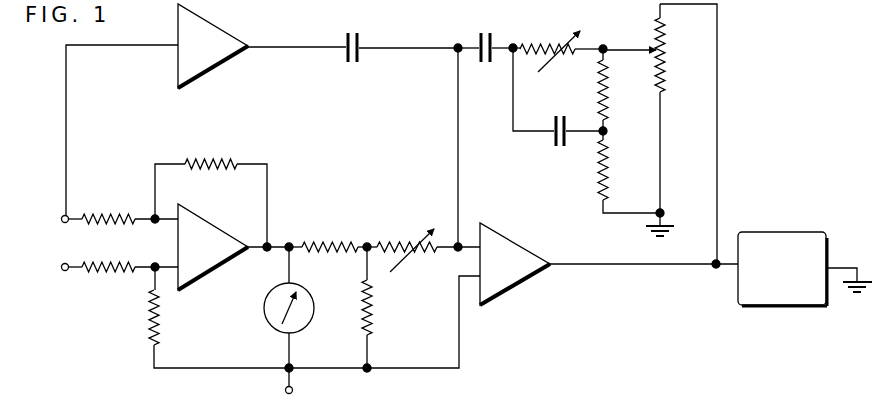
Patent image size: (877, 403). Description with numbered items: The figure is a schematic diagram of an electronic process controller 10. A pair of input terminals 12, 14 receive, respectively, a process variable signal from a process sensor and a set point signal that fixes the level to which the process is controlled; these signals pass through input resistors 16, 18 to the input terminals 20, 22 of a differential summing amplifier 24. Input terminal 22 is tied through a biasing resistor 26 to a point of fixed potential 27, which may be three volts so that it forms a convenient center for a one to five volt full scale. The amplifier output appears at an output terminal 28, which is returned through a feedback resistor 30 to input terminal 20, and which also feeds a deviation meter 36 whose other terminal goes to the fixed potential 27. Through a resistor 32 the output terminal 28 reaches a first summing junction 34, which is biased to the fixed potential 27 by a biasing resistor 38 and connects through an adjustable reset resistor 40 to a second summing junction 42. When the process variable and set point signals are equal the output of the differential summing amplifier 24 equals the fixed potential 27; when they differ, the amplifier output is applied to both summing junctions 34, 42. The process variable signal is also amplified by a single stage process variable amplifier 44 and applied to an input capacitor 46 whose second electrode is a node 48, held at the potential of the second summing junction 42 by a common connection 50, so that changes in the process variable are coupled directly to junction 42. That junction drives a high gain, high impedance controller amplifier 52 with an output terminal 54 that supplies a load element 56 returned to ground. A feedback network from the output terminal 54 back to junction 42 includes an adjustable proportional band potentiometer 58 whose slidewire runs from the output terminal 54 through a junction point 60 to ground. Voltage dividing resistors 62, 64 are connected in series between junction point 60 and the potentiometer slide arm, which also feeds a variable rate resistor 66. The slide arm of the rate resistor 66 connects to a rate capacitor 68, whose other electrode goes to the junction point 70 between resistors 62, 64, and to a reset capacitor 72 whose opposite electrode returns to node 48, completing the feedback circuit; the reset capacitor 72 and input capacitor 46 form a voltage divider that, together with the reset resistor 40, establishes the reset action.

The electronic process controller 10 is at (61, 122).
The input terminal 12 is at (65, 224).
The input terminal 14 is at (65, 272).
The input resistor 16 is at (113, 212).
The input resistor 18 is at (120, 274).
The input terminal of differential summing amplifier 20 is at (153, 214).
The input terminal of differential summing amplifier 22 is at (154, 262).
The differential summing amplifier 24 is at (198, 228).
The biasing resistor 26 is at (158, 320).
The point of fixed potential 27 is at (285, 390).
The output terminal 28 is at (266, 252).
The feedback resistor 30 is at (220, 158).
The resistor 32 is at (333, 241).
The first summing junction 34 is at (371, 228).
The deviation meter 36 is at (266, 310).
The biasing resistor 38 is at (372, 310).
The adjustable reset resistor 40 is at (410, 243).
The second summing junction 42 is at (456, 253).
The process variable amplifier 44 is at (210, 27).
The input capacitor 46 is at (351, 65).
The node 48 is at (458, 40).
The common connection 50 is at (456, 137).
The controller amplifier 52 is at (507, 243).
The output terminal 54 is at (714, 272).
The load element 56 is at (784, 240).
The adjustable proportional band potentiometer 58 is at (667, 58).
The junction point 60 is at (664, 211).
The voltage dividing resistor 62 is at (600, 168).
The voltage dividing resistor 64 is at (600, 88).
The variable rate resistor 66 is at (557, 40).
The rate capacitor 68 is at (558, 148).
The junction point 70 is at (608, 131).
The reset capacitor 72 is at (487, 65).